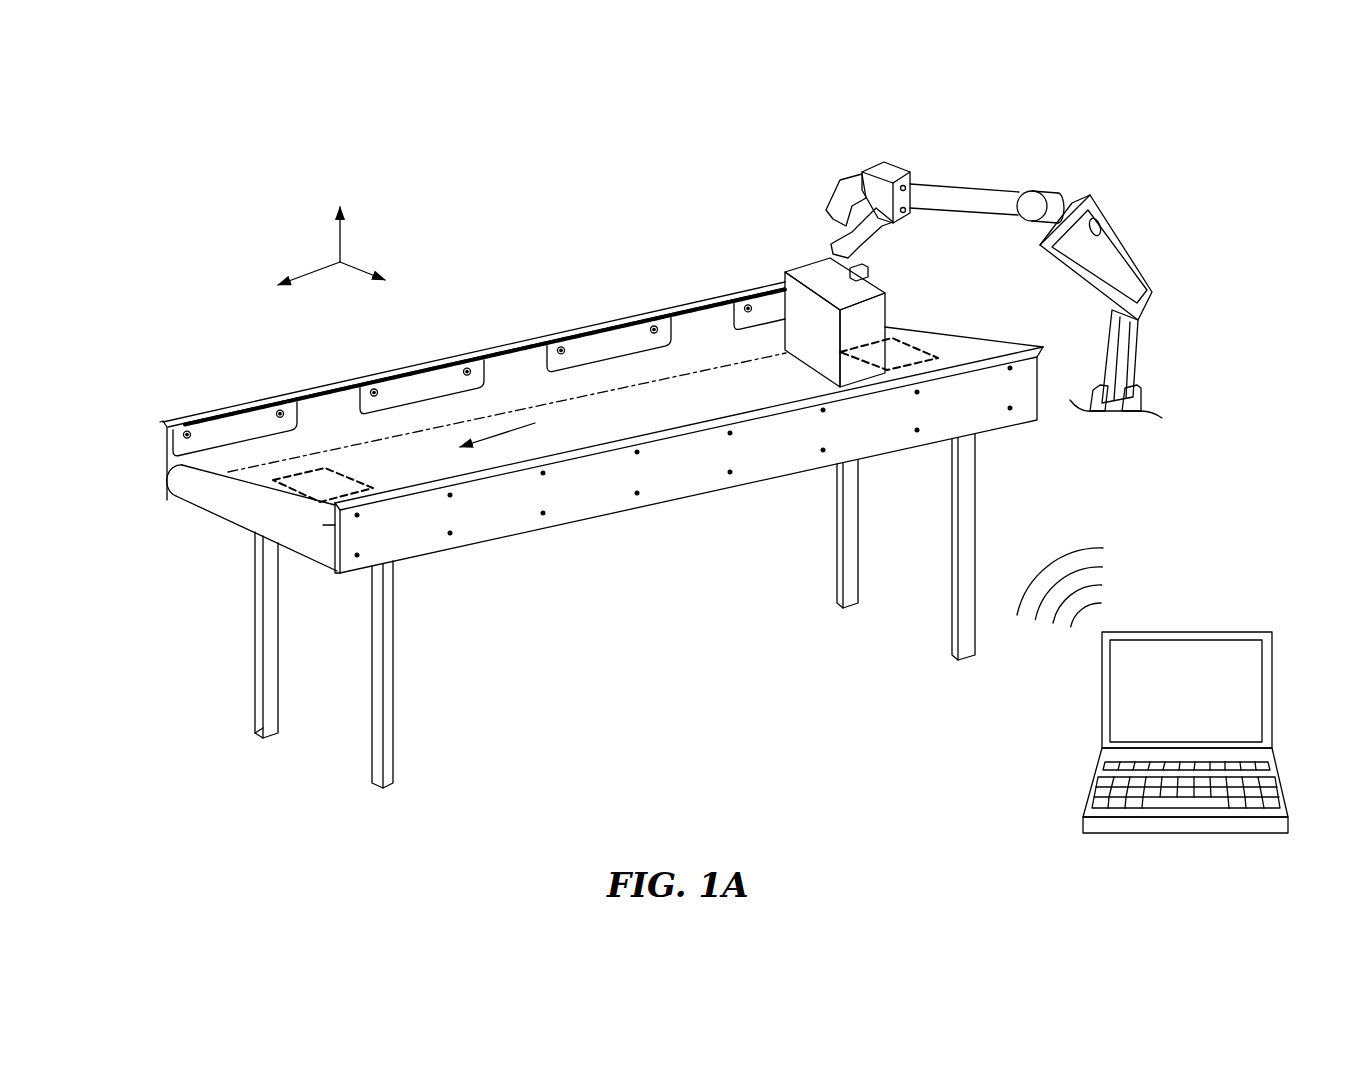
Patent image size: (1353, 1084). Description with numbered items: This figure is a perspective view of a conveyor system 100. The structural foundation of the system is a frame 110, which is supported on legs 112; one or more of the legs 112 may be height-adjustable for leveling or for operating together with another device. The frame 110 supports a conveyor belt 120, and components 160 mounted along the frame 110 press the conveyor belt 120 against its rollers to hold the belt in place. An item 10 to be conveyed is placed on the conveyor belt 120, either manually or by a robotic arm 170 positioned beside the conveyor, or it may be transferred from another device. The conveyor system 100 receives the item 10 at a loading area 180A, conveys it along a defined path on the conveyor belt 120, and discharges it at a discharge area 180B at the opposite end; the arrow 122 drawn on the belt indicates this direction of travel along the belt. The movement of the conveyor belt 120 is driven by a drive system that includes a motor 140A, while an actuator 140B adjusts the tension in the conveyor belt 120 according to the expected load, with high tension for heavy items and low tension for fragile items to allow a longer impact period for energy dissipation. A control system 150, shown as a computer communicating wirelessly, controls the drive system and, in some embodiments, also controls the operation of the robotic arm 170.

The conveyor system 100 is at (701, 468).
The item 10 is at (820, 332).
The frame 110 is at (602, 497).
The legs 112 is at (385, 643).
The conveyor belt 120 is at (196, 478).
The conveying direction 122 is at (507, 412).
The motor 140A is at (897, 352).
The actuator 140B is at (312, 495).
The control system 150 is at (1152, 690).
The components 160 is at (260, 420).
The robotic arm 170 is at (994, 281).
The loading area 180A is at (947, 357).
The discharge area 180B is at (253, 503).